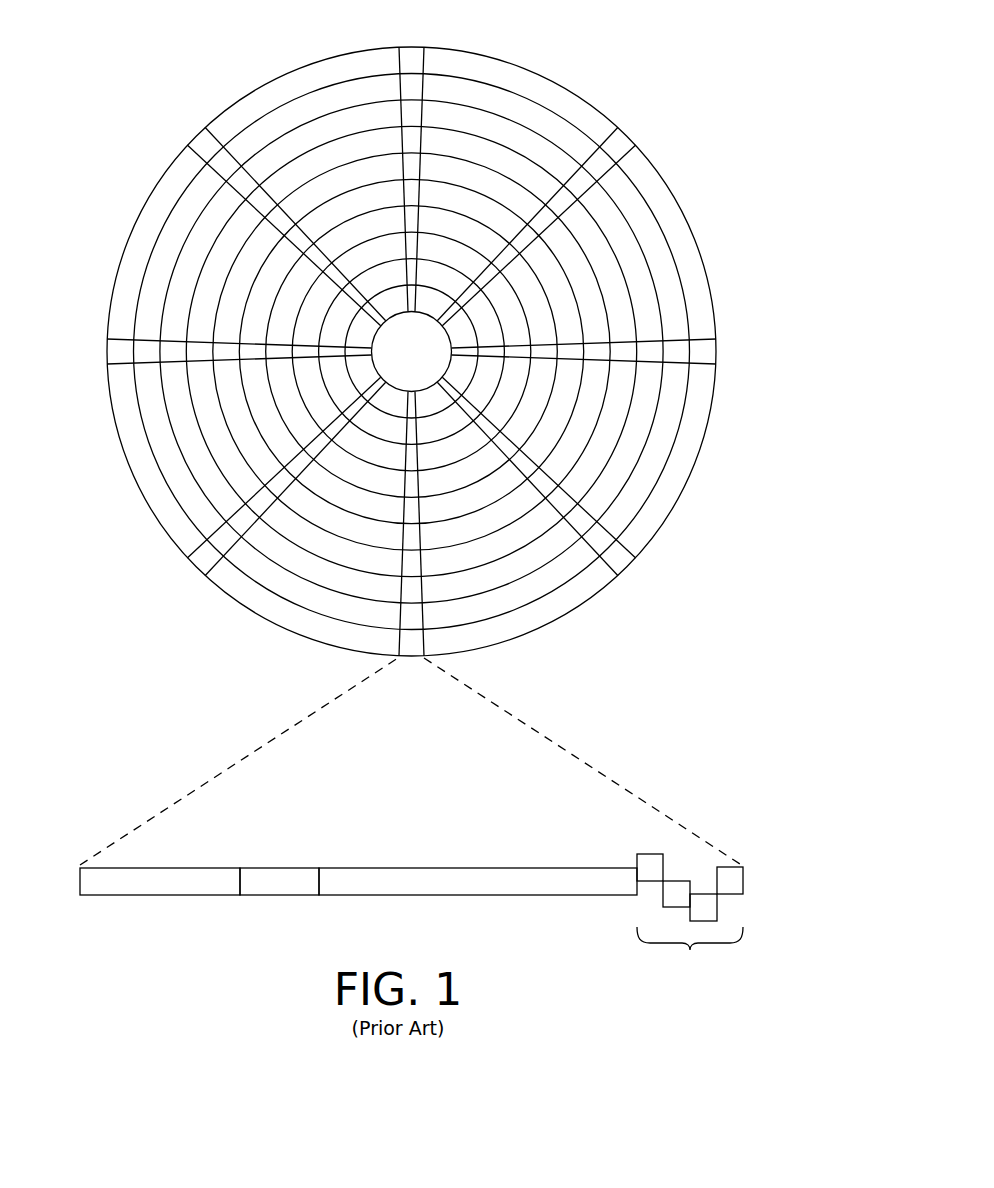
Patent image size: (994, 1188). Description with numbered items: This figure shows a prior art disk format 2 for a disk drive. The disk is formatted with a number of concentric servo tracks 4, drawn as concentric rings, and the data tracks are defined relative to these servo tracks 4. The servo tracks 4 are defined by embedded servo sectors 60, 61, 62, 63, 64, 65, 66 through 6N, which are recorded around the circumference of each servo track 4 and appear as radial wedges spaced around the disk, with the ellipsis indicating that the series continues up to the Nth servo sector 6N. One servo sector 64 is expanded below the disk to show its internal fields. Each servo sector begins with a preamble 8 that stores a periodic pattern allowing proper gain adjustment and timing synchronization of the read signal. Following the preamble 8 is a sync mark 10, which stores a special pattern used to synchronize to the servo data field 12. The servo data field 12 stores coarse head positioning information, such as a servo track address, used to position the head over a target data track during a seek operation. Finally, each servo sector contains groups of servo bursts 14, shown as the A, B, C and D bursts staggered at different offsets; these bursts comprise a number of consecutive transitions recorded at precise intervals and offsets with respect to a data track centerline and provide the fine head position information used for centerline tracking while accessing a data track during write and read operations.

The disk format 2 is at (182, 49).
The servo tracks 4 is at (516, 110).
The servo sector 60 is at (413, 56).
The servo sector 61 is at (620, 144).
The servo sector 62 is at (708, 352).
The servo sector 63 is at (618, 558).
The servo sector 64 is at (274, 724).
The servo sector 65 is at (207, 560).
The servo sector 66 is at (114, 352).
The servo sector 6N is at (204, 143).
The preamble 8 is at (142, 896).
The sync mark 10 is at (278, 896).
The servo data field 12 is at (467, 896).
The servo bursts 14 is at (620, 834).